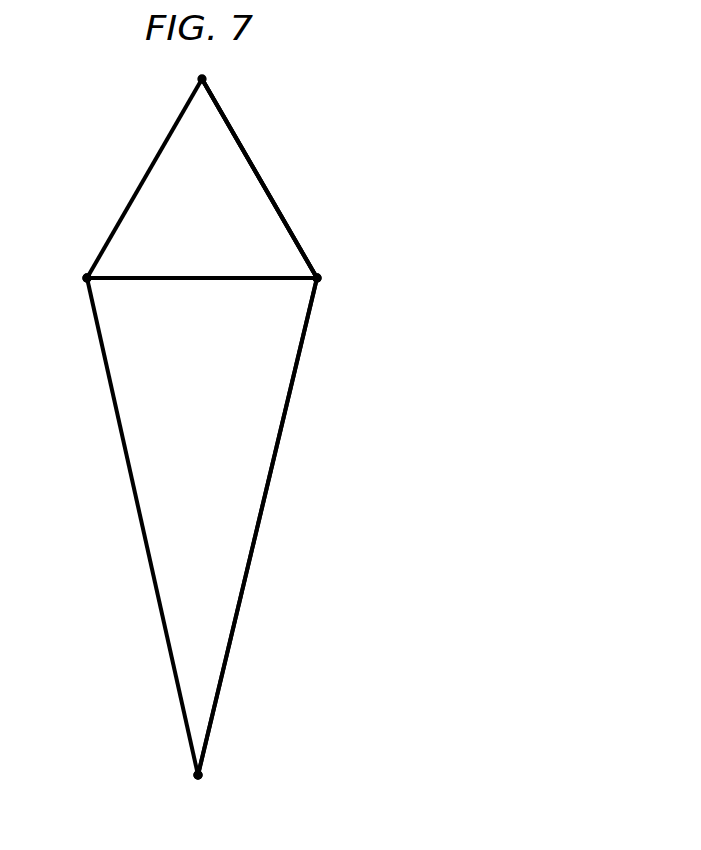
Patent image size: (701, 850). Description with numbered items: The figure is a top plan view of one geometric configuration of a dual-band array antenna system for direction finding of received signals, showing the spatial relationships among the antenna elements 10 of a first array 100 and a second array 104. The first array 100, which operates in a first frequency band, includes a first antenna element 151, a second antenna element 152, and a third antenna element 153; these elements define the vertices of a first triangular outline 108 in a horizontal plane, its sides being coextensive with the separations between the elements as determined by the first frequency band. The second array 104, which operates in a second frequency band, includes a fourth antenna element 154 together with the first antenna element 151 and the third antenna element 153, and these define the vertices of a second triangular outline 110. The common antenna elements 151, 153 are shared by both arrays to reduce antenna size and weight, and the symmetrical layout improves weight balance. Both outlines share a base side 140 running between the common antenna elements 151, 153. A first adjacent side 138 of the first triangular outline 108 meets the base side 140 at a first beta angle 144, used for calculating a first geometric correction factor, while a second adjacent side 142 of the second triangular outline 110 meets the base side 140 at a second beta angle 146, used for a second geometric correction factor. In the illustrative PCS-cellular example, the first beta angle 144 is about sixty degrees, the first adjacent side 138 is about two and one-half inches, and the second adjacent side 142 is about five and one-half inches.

The antenna element 10 is at (200, 78).
The first array 100 is at (290, 198).
The second array 104 is at (282, 490).
The first triangular outline 108 is at (262, 153).
The second triangular outline 110 is at (288, 455).
The first adjacent side 138 is at (262, 190).
The base side 140 is at (207, 280).
The second adjacent side 142 is at (125, 456).
The first beta angle 144 is at (252, 276).
The second beta angle 146 is at (152, 280).
The first antenna element 151 is at (85, 280).
The second antenna element 152 is at (203, 84).
The third antenna element 153 is at (313, 282).
The fourth antenna element 154 is at (196, 777).